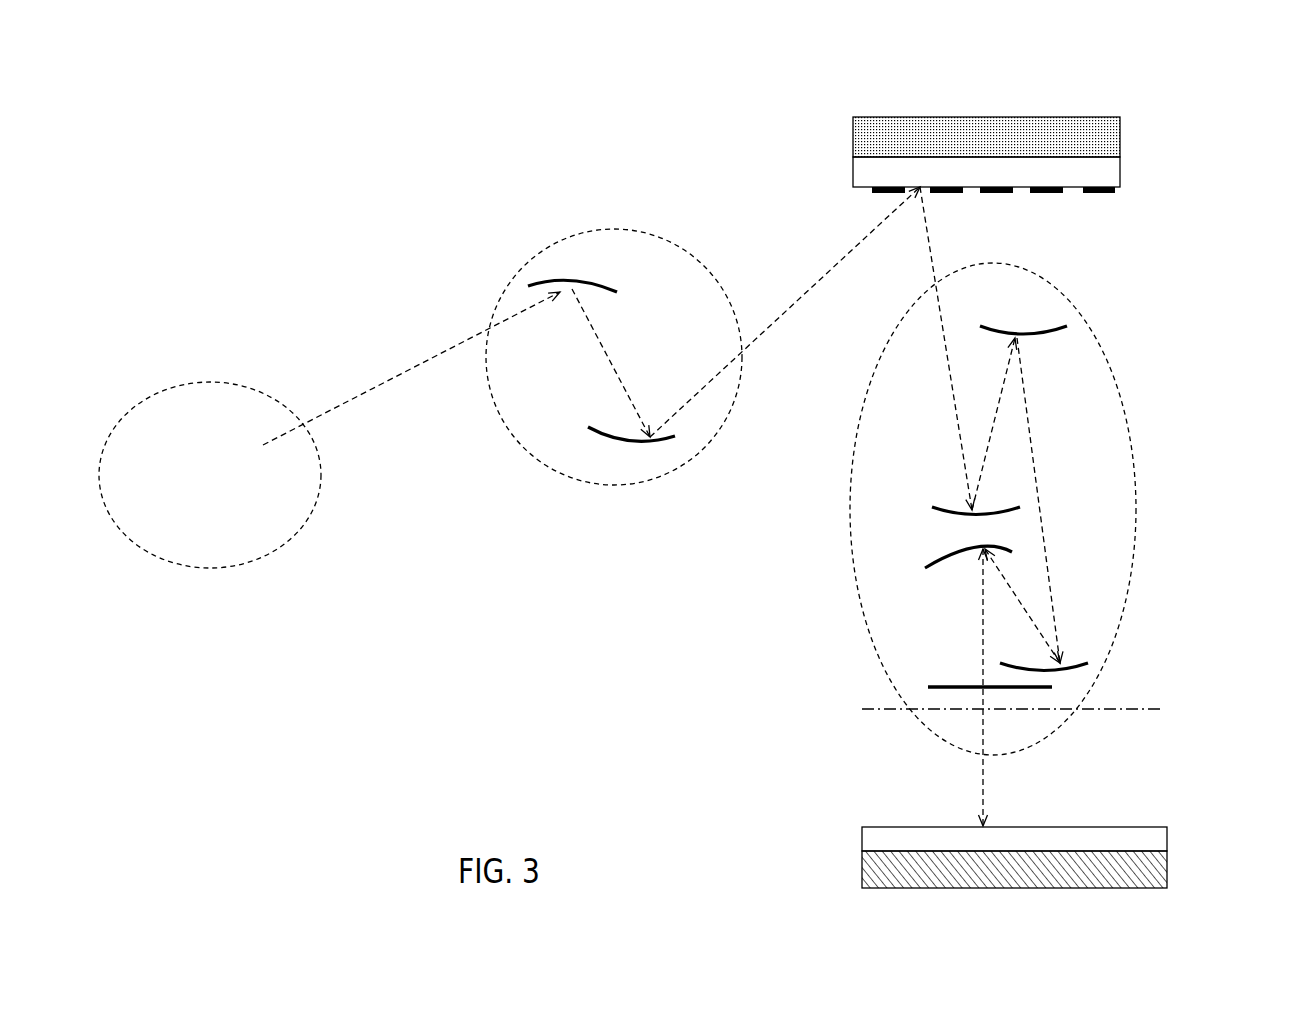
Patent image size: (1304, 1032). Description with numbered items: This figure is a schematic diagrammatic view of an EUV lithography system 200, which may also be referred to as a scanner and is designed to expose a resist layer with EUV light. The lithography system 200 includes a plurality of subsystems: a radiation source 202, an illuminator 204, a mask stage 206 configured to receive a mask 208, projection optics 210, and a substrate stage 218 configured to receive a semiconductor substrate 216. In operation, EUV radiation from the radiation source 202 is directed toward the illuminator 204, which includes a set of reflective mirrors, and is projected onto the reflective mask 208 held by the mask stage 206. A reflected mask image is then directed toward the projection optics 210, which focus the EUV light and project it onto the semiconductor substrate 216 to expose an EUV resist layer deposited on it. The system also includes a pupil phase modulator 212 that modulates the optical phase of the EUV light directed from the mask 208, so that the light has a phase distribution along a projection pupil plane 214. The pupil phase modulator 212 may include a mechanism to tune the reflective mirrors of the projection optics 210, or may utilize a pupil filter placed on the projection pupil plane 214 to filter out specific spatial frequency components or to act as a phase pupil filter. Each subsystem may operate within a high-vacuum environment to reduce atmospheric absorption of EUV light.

The lithography system 200 is at (505, 125).
The radiation source 202 is at (162, 565).
The illuminator 204 is at (613, 487).
The mask stage 206 is at (836, 140).
The mask 208 is at (836, 175).
The projection optics 210 is at (1131, 582).
The pupil phase modulator 212 is at (914, 686).
The projection pupil plane 214 is at (1170, 712).
The semiconductor substrate 216 is at (848, 841).
The substrate stage 218 is at (848, 878).